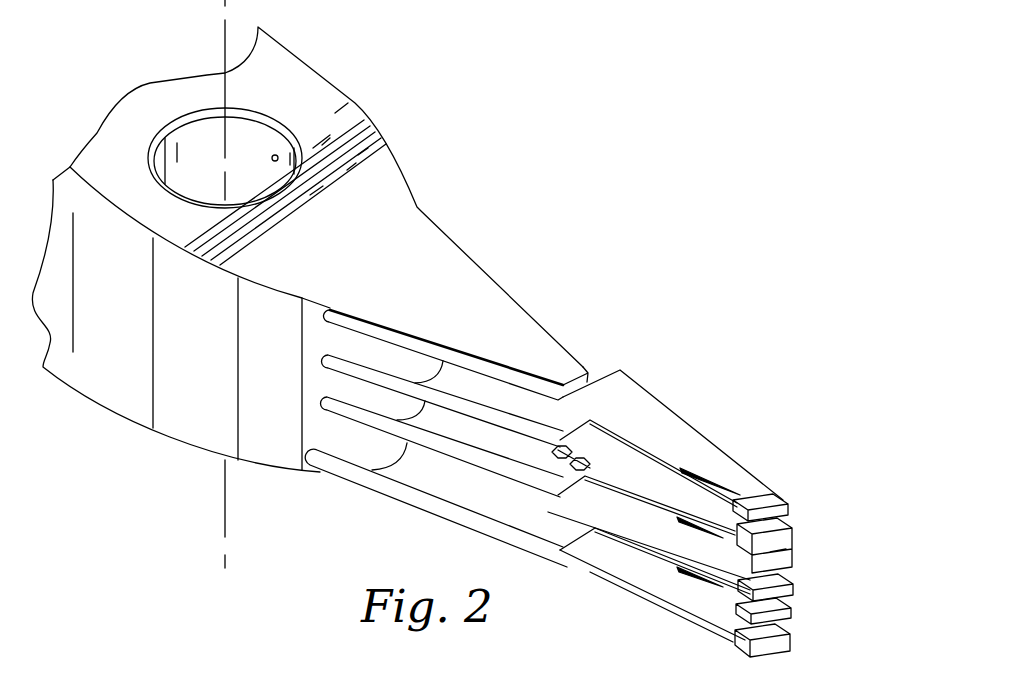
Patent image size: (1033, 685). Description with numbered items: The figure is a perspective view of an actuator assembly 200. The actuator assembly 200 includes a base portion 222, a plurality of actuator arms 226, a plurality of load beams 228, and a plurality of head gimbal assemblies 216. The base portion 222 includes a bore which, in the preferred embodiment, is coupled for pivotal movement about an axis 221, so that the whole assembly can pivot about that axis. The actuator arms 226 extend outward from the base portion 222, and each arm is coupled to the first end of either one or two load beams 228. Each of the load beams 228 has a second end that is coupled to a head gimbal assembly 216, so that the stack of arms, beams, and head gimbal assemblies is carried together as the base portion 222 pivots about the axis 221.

The actuator assembly 200 is at (523, 237).
The base portion 222 is at (307, 82).
The axis 221 is at (227, 495).
The actuator arms 226 is at (543, 513).
The load beams 228 is at (645, 577).
The head gimbal assemblies 216 is at (795, 635).